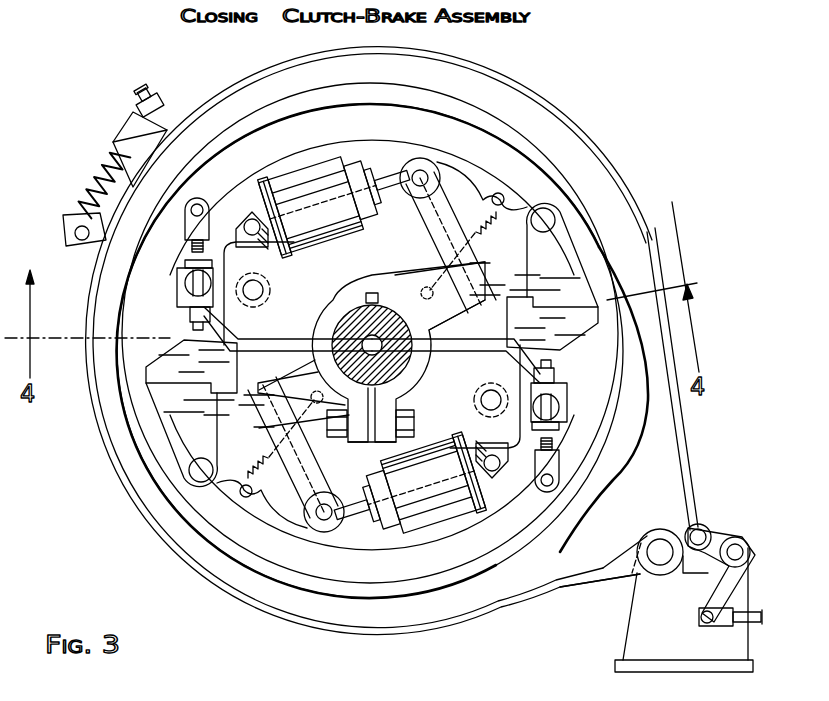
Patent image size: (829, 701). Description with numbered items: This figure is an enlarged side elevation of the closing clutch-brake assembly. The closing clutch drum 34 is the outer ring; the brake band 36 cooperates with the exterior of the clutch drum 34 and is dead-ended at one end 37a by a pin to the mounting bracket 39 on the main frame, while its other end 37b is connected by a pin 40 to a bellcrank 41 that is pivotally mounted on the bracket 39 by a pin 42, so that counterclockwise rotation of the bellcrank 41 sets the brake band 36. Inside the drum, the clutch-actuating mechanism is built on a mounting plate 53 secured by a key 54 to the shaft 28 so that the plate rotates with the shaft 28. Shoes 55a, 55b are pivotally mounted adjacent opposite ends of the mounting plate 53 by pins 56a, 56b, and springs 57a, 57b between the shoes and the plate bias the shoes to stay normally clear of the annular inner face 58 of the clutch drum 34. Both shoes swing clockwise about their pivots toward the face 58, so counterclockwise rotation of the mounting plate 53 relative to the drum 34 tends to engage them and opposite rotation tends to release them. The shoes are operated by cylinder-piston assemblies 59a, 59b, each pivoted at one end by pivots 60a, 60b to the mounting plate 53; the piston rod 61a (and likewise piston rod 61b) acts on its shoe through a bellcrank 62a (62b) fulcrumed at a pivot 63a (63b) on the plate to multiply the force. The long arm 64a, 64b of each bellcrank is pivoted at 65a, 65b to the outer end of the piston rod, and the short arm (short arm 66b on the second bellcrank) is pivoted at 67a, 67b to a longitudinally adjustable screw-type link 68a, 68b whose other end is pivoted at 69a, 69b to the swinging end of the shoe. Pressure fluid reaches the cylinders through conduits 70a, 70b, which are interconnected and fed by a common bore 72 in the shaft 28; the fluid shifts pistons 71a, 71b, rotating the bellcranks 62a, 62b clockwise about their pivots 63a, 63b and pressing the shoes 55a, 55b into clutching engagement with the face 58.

The shaft 28 is at (381, 300).
The closing clutch drum 34 is at (606, 481).
The brake band 36 is at (483, 80).
The end of band 37a is at (622, 567).
The other end of band 37b is at (688, 483).
The mounting bracket 39 is at (642, 637).
The pin 40 is at (699, 529).
The bellcrank 41 is at (716, 540).
The pin 42 is at (737, 550).
The mounting plate 53 is at (568, 327).
The key 54 is at (368, 296).
The shoe 55a is at (293, 551).
The shoe 55b is at (485, 145).
The pin 56a is at (200, 463).
The pin 56b is at (550, 215).
The spring 57a is at (251, 475).
The spring 57b is at (475, 246).
The annular inner face 58 is at (618, 369).
The cylinder-piston assembly 59a is at (354, 158).
The cylinder-piston assembly 59b is at (390, 513).
The pivot 60a is at (250, 225).
The pivot 60b is at (498, 463).
The piston rod 61a is at (393, 182).
The piston rod 61b is at (361, 498).
The bellcrank 62a is at (440, 249).
The bellcrank 62b is at (287, 410).
The pivot 63a is at (492, 402).
The pivot 63b is at (264, 292).
The long arm 64a is at (440, 222).
The long arm 64b is at (313, 461).
The pivot 65a is at (430, 180).
The pivot 65b is at (320, 512).
The short arm 66b is at (188, 297).
The pivot 67a is at (555, 400).
The pivot 67b is at (192, 283).
The screw-type link 68a is at (553, 434).
The screw-type link 68b is at (192, 252).
The pivot 69a is at (548, 472).
The pivot 69b is at (188, 221).
The conduit 70a is at (233, 340).
The conduit 70b is at (493, 350).
The piston 71a is at (280, 183).
The piston 71b is at (463, 496).
The bore 72 is at (365, 337).